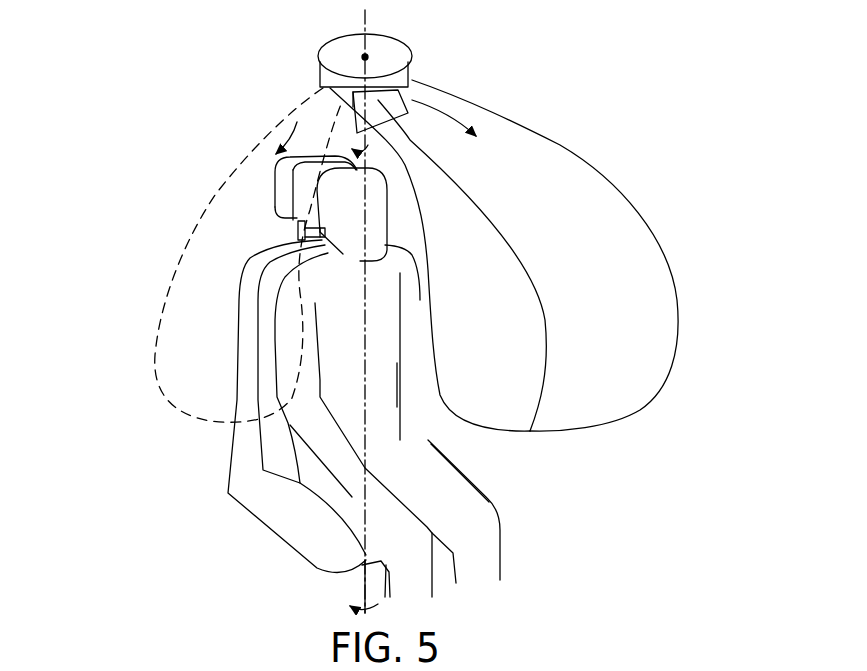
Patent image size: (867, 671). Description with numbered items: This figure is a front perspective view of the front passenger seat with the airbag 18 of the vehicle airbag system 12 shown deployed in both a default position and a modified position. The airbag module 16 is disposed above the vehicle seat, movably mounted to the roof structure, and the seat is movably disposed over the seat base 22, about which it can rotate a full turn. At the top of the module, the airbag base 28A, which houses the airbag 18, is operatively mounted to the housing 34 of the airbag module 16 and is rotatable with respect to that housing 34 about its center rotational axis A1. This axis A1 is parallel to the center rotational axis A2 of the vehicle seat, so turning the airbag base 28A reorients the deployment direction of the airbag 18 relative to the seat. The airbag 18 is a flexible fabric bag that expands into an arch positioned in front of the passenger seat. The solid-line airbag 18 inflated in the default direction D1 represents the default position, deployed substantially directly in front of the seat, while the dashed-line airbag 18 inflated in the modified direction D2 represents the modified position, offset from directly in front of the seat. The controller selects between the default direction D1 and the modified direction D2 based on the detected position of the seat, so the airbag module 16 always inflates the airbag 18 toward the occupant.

The vehicle airbag system 12 is at (598, 78).
The airbag module 16 is at (503, 36).
The airbag 18 is at (637, 195).
The seat base 22 is at (470, 473).
The airbag base 28A is at (321, 84).
The housing 34 is at (413, 66).
The center rotational axis A1 is at (363, 57).
The center rotational axis A2 is at (364, 598).
The default direction D1 is at (441, 113).
The modified direction D2 is at (297, 128).